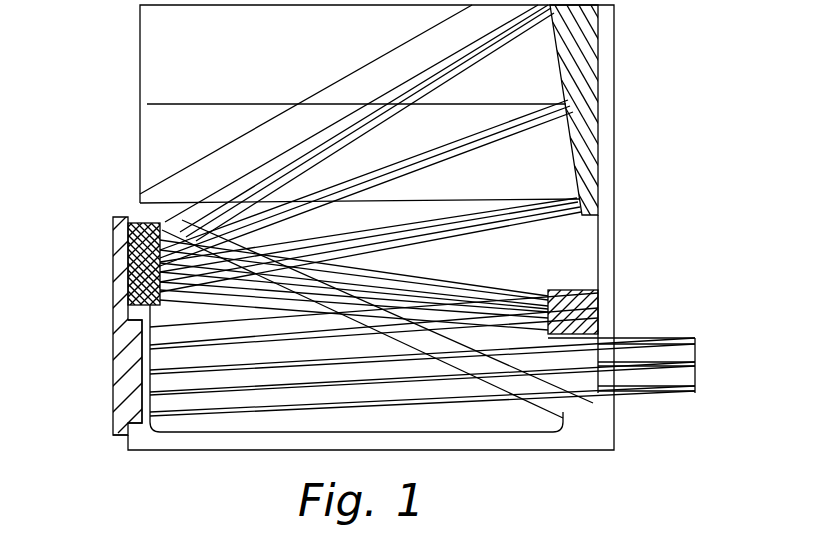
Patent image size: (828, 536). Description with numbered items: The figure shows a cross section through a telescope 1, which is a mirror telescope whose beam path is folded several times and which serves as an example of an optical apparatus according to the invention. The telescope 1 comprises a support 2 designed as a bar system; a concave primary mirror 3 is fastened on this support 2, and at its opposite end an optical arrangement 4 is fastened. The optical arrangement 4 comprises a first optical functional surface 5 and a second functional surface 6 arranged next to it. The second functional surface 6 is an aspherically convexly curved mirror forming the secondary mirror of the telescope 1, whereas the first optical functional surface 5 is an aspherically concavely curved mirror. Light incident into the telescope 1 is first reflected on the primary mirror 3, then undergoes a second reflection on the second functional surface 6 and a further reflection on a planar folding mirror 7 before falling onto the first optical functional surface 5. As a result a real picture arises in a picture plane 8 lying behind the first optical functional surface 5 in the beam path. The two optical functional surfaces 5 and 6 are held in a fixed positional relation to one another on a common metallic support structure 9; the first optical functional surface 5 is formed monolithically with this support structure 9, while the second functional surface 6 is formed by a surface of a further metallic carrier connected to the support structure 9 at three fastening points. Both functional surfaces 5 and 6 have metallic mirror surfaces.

The telescope 1 is at (118, 118).
The support 2 is at (355, 83).
The primary mirror 3 is at (548, 38).
The optical arrangement 4 is at (113, 336).
The first optical functional surface 5 is at (143, 382).
The second functional surface 6 is at (167, 243).
The planar folding mirror 7 is at (561, 292).
The picture plane 8 is at (695, 338).
The support structure 9 is at (113, 268).